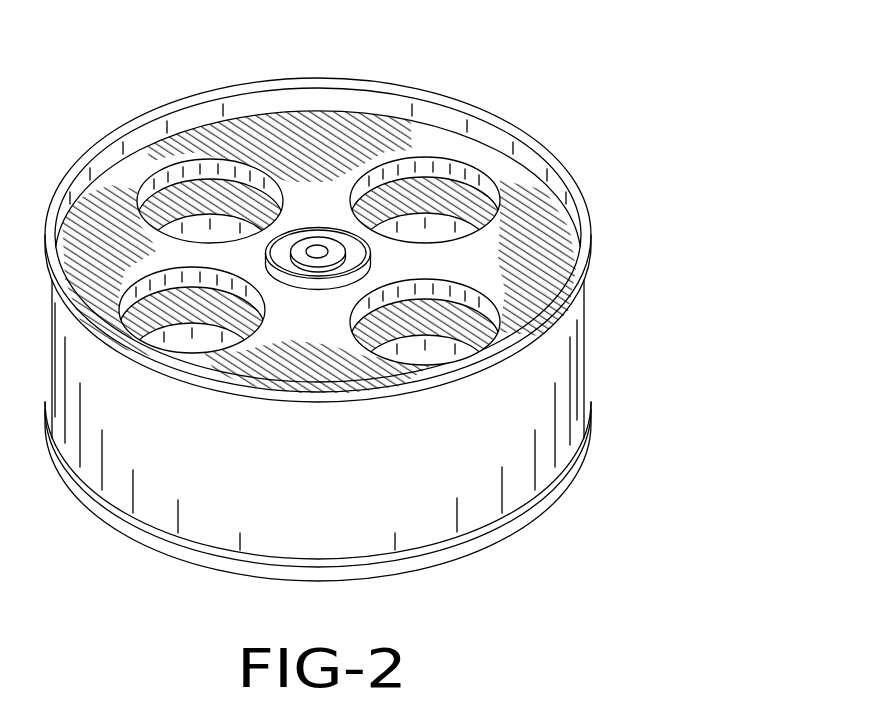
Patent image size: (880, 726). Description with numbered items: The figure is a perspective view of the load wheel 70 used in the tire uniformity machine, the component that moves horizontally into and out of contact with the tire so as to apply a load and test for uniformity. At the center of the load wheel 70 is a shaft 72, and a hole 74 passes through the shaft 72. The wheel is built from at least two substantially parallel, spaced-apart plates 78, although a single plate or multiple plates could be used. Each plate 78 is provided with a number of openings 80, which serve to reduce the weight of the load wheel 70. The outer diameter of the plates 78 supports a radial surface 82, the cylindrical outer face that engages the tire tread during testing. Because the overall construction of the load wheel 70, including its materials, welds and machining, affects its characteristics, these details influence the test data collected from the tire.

The load wheel 70 is at (364, 294).
The shaft 72 is at (316, 245).
The hole 74 is at (333, 245).
The plates 78 is at (385, 148).
The openings 80 is at (446, 322).
The radial surface 82 is at (542, 372).